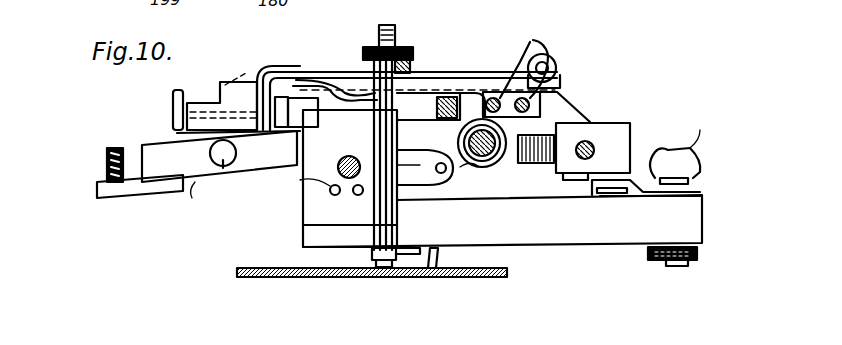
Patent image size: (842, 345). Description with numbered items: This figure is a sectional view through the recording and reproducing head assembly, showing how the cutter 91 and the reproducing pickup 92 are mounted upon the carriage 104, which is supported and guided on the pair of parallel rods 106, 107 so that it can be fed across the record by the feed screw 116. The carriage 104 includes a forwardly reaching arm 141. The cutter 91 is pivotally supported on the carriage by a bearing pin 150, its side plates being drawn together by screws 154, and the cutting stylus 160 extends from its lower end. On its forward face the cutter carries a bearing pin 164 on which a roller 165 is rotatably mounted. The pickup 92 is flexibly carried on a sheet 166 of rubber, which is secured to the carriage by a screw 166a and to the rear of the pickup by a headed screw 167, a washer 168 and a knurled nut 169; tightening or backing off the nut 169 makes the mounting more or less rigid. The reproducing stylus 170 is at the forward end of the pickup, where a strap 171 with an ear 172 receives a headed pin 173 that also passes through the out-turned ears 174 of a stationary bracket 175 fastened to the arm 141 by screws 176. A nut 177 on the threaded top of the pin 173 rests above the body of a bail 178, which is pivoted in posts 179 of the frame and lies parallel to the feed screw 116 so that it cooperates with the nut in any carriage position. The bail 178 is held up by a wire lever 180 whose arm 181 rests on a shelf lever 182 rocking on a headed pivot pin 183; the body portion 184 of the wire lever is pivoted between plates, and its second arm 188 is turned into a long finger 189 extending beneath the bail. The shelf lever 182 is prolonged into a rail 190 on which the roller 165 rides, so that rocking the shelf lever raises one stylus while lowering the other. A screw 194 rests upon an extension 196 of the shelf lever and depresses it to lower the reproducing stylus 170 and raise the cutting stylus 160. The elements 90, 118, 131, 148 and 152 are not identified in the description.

The support surface 90 is at (297, 278).
The cutter 91 is at (297, 209).
The reproducing pickup 92 is at (543, 237).
The carriage 104 is at (630, 130).
The parallel rod 106 is at (601, 155).
The parallel rod 107 is at (441, 106).
The feed screw 116 is at (465, 130).
The mounting bolt 118 is at (383, 278).
The frame member 131 is at (298, 236).
The forwardly reaching arm 141 is at (576, 111).
The spring 148 is at (532, 163).
The bearing pin 150 is at (458, 172).
The lug 152 is at (405, 182).
The screws 154 is at (330, 188).
The cutting stylus 160 is at (366, 258).
The bearing pin 164 is at (275, 66).
The roller 165 is at (327, 112).
The sheet of rubber 166 is at (633, 197).
The screw 166a is at (590, 205).
The headed screw 167 is at (675, 166).
The washer 168 is at (713, 135).
The knurled nut 169 is at (645, 260).
The reproducing stylus 170 is at (438, 262).
The strap 171 is at (412, 268).
The ear 172 is at (375, 72).
The headed pin 173 is at (374, 130).
The out-turned ears 174 is at (372, 215).
The stationary bracket 175 is at (458, 82).
The screws 176 is at (548, 57).
The nut 177 is at (395, 46).
The bail 178 is at (412, 68).
The posts 179 is at (558, 70).
The wire lever 180 is at (158, 115).
The arm 181 is at (173, 127).
The shelf lever 182 is at (195, 201).
The headed pivot pin 183 is at (200, 178).
The body portion 184 is at (225, 85).
The second arm 188 is at (238, 107).
The long finger 189 is at (279, 96).
The rail 190 is at (292, 150).
The screw 194 is at (105, 163).
The extension 196 is at (130, 196).